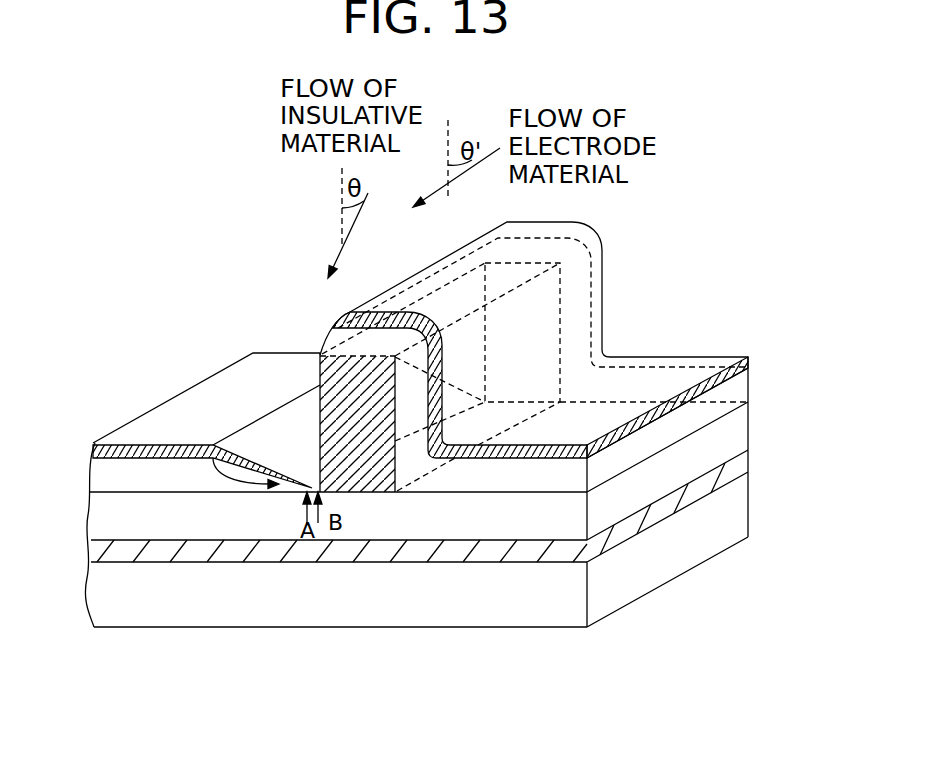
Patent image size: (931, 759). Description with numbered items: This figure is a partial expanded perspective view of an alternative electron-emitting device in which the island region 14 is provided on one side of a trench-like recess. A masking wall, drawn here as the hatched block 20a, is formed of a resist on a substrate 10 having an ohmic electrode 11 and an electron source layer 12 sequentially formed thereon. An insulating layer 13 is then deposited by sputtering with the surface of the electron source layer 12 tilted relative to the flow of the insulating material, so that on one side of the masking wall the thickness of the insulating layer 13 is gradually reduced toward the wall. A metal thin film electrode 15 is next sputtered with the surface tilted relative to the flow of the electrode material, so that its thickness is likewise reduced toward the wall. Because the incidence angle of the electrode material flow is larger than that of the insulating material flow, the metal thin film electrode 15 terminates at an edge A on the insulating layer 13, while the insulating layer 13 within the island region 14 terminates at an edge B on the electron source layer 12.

The substrate 10 is at (748, 518).
The ohmic electrode 11 is at (742, 463).
The electron source layer 12 is at (748, 433).
The insulating layer 13 is at (748, 398).
The island region 14 is at (205, 445).
The metal thin film electrode 15 is at (748, 362).
The gate electrode 20a is at (373, 482).